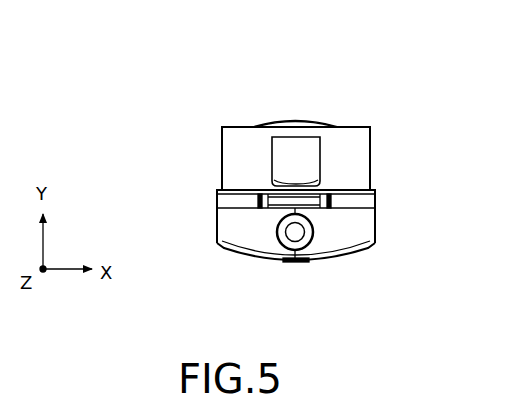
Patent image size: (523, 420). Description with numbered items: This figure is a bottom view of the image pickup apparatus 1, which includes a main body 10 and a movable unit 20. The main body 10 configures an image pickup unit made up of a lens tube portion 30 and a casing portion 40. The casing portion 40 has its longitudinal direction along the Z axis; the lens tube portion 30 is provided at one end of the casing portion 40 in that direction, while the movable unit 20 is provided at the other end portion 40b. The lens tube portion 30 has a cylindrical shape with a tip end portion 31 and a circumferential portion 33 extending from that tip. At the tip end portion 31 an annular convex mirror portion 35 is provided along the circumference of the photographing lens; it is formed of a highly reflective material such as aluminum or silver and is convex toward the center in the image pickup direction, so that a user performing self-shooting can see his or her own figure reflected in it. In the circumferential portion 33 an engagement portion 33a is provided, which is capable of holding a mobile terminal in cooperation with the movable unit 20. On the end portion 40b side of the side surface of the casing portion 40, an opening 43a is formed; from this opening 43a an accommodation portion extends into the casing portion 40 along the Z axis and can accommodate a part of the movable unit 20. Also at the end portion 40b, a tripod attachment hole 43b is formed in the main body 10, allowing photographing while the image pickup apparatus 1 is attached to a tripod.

The image pickup apparatus 1 is at (424, 80).
The main body 10 is at (198, 225).
The movable unit 20 is at (278, 198).
The lens tube portion 30 is at (365, 137).
The tip end portion 31 is at (347, 125).
The circumferential portion 33 is at (245, 143).
The engagement portion 33a is at (302, 165).
The convex mirror portion 35 is at (273, 122).
The casing portion 40 is at (365, 223).
The end portion 40b is at (358, 238).
The opening 43a is at (258, 192).
The tripod attachment hole 43b is at (303, 237).